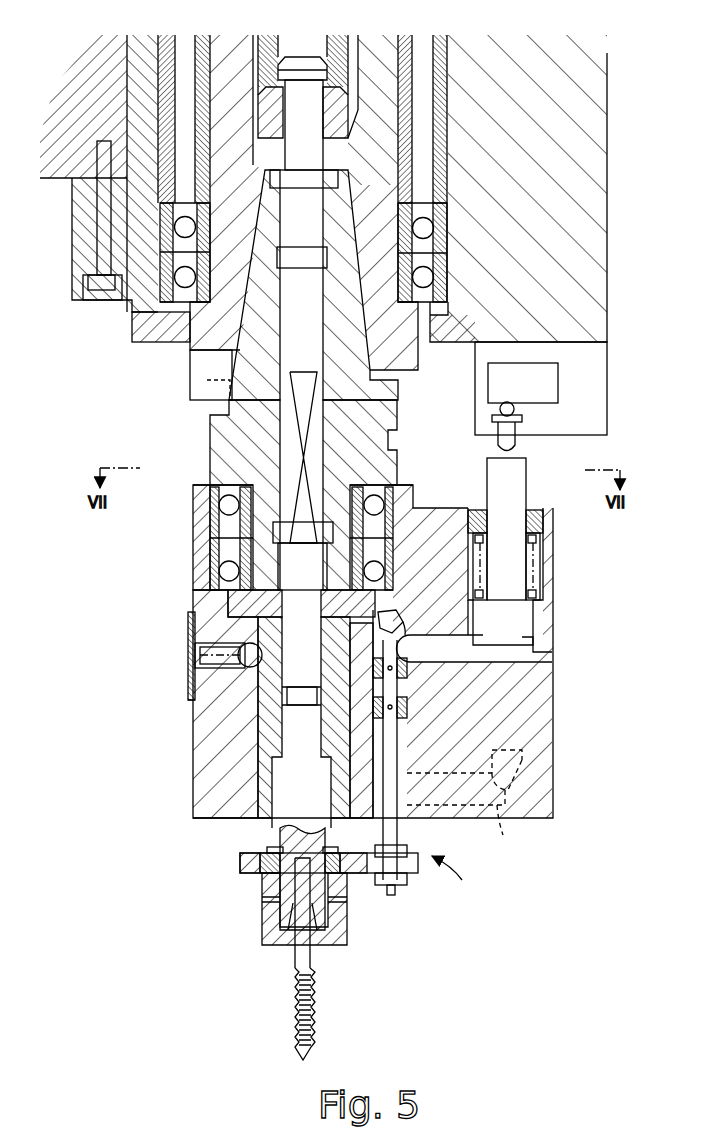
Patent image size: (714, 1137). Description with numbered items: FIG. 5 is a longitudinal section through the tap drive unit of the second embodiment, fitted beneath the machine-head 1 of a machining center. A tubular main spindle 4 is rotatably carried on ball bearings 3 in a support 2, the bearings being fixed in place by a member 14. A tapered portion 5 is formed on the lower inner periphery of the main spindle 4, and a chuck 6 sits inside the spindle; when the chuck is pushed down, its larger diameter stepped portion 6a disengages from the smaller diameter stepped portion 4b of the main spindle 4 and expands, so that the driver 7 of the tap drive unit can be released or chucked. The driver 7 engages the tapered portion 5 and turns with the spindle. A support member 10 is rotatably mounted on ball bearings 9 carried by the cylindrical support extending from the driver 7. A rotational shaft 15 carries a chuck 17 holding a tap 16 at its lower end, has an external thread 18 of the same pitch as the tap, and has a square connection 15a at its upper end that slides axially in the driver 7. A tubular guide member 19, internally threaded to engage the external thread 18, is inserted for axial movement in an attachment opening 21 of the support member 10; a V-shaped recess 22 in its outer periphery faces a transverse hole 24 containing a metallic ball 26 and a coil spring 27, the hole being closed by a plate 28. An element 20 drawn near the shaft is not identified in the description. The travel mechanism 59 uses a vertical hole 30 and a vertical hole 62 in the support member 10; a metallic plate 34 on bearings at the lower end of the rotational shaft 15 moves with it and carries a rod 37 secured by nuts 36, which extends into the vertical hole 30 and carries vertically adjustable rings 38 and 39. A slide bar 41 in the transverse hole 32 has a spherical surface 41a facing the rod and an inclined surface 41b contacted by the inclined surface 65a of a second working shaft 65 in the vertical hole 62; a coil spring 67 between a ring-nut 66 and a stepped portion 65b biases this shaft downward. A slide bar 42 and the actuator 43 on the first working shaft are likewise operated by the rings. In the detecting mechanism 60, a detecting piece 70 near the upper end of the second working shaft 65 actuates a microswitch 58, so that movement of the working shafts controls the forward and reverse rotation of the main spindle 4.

The machine-head 1 is at (45, 182).
The support 2 is at (78, 302).
The ball bearings 3 is at (448, 224).
The main spindle 4 is at (365, 110).
The smaller diameter stepped portion 4b is at (348, 105).
The tapered portion 5 is at (365, 314).
The chuck 6 is at (358, 108).
The larger diameter stepped portion 6a is at (352, 108).
The driver 7 is at (210, 458).
The ball bearings 9 is at (400, 494).
The support member 10 is at (193, 516).
The member 14 is at (150, 344).
The rotational shaft 15 is at (280, 842).
The connection 15a is at (302, 372).
The tap 16 is at (316, 1028).
The chuck 17 is at (350, 940).
The external thread 18 is at (262, 607).
The tubular guide member 19 is at (265, 786).
The tap spindle 20 is at (283, 650).
The attachment opening 21 is at (262, 818).
The V-shaped recess 22 is at (244, 650).
The transverse hole 24 is at (195, 656).
The metallic ball 26 is at (250, 667).
The coil spring 27 is at (188, 634).
The plate 28 is at (188, 684).
The vertical hole 30 is at (396, 618).
The transverse hole 32 is at (412, 632).
The metallic plate 34 is at (365, 873).
The nuts 36 is at (407, 850).
The rod 37 is at (391, 895).
The ring 38 is at (407, 668).
The ring 39 is at (407, 707).
The slide bar 41 is at (440, 636).
The spherical surface 41a is at (390, 614).
The inclined surface 41b is at (466, 620).
The slide bar 42 is at (505, 830).
The actuator 43 is at (530, 763).
The microswitch 58 is at (558, 383).
The travel mechanism 59 is at (459, 875).
The detecting mechanism 60 is at (614, 420).
The vertical hole 62 is at (553, 620).
The second working shaft 65 is at (527, 492).
The inclined surface 65a is at (533, 652).
The stepped portion 65b is at (540, 591).
The ring-nut 66 is at (535, 510).
The coil spring 67 is at (540, 553).
The detecting piece 70 is at (515, 445).